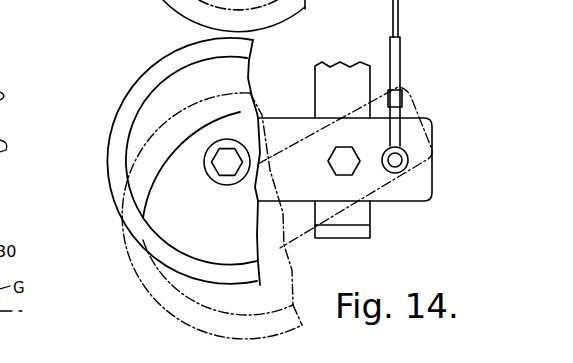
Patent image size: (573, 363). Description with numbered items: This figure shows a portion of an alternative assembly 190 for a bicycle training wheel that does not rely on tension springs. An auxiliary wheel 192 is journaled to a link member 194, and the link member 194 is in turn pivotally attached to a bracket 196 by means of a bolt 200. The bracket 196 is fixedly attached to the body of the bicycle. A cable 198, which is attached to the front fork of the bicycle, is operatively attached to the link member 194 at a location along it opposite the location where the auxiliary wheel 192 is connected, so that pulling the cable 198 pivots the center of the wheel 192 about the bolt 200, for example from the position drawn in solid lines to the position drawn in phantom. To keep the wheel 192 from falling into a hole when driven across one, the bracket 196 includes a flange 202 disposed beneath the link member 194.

The alternative assembly 190 is at (112, 58).
The auxiliary wheel 192 is at (125, 93).
The link member 194 is at (427, 232).
The bracket 196 is at (315, 88).
The cable 198 is at (400, 24).
The bolt 200 is at (330, 162).
The flange 202 is at (330, 240).